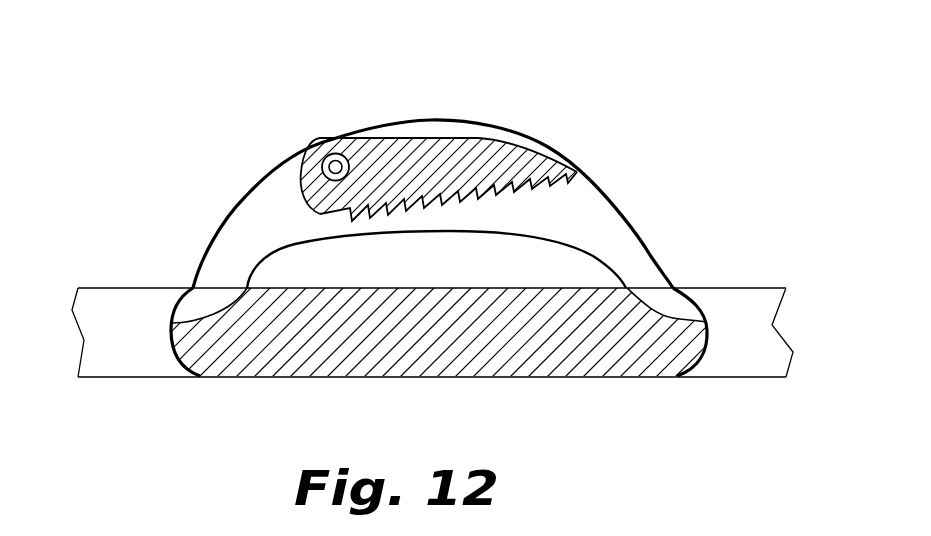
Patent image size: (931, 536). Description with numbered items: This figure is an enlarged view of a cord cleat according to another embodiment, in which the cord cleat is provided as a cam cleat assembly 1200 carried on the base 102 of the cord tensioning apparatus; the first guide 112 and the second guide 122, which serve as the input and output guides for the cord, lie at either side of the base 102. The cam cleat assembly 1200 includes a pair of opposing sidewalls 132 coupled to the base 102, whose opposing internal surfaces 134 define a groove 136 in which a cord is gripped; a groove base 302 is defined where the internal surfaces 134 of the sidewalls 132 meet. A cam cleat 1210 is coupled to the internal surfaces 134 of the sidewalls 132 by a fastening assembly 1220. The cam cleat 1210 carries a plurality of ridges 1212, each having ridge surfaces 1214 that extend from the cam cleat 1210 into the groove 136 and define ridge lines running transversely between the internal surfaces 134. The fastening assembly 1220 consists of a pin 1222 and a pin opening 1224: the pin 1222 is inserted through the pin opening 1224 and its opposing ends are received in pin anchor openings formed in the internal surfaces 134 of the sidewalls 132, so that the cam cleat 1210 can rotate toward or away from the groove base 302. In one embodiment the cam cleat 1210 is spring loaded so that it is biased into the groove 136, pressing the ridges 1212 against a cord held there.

The base 102 is at (540, 374).
The first guide 112 is at (207, 305).
The second guide 122 is at (663, 303).
The sidewalls 132 is at (590, 180).
The internal surfaces 134 is at (614, 212).
The groove 136 is at (238, 231).
The groove base 302 is at (618, 270).
The cam cleat assembly 1200 is at (553, 53).
The cam cleat 1210 is at (430, 43).
The ridges 1212 is at (477, 200).
The ridge surfaces 1214 is at (458, 210).
The fastening assembly 1220 is at (142, 116).
The pin 1222 is at (322, 158).
The pin opening 1224 is at (326, 167).